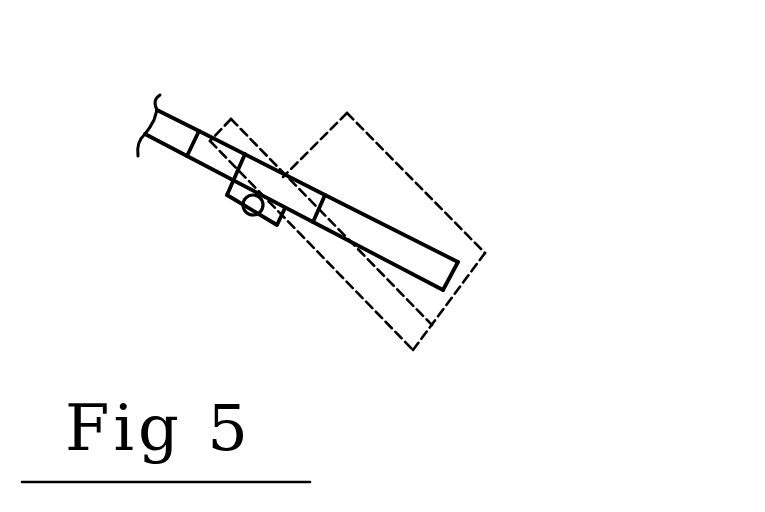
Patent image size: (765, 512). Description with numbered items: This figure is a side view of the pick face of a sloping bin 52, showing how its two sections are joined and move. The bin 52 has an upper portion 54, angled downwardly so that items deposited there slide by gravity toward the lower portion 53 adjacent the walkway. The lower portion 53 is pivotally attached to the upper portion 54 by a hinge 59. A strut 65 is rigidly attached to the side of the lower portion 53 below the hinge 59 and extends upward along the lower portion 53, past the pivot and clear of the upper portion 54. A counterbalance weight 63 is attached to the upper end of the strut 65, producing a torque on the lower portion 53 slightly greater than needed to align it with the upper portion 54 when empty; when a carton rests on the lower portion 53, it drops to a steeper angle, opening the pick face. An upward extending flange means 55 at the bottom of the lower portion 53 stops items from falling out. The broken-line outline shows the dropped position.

The bin 52 is at (313, 190).
The lower portion 53 is at (420, 248).
The upper portion 54 is at (162, 112).
The flange means 55 is at (455, 278).
The hinge 59 is at (252, 215).
The counterbalance weight 63 is at (200, 162).
The strut 65 is at (262, 183).